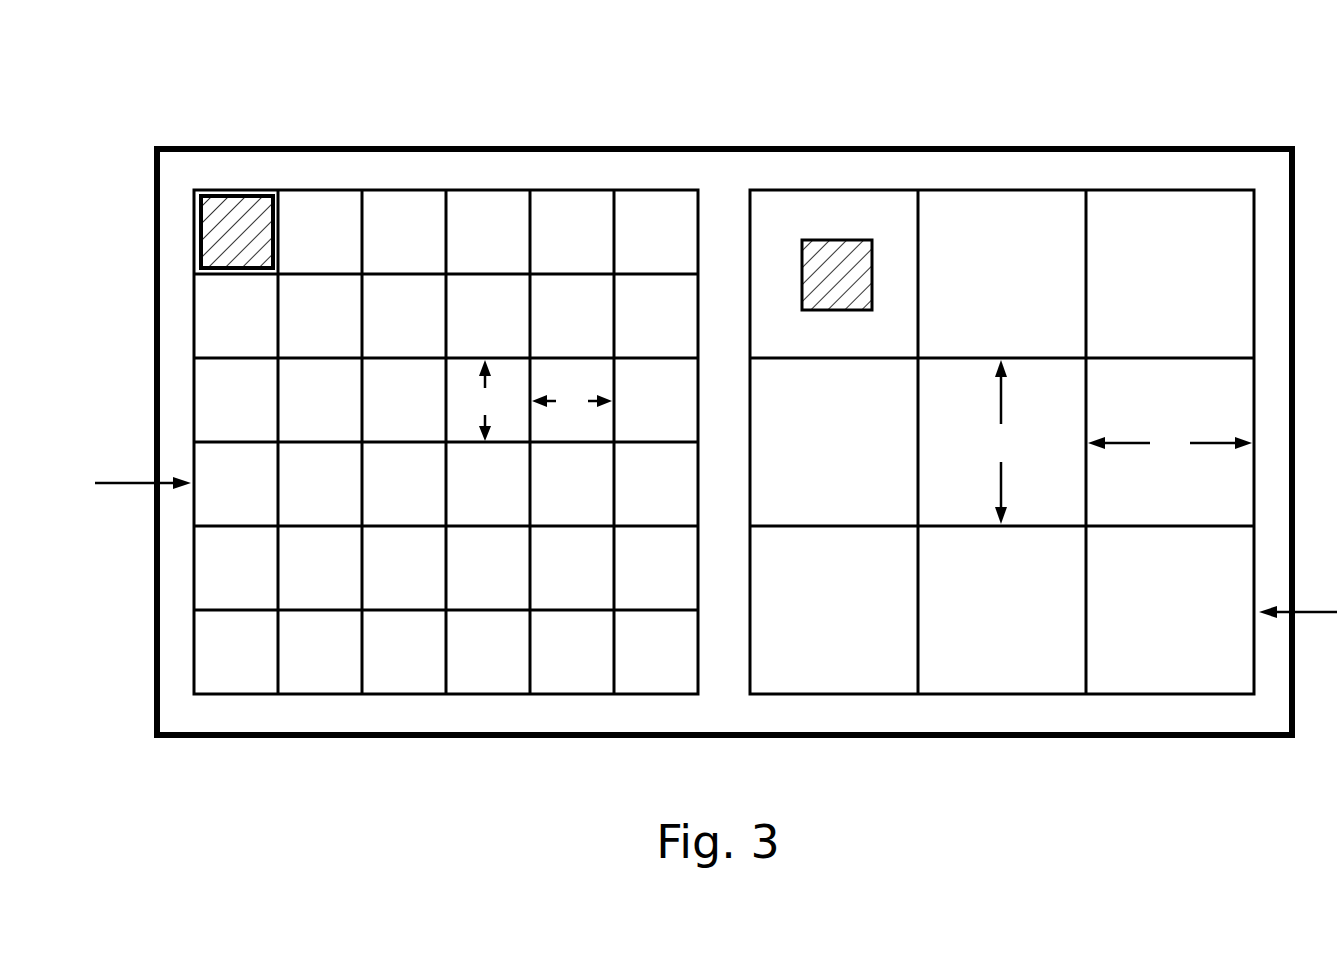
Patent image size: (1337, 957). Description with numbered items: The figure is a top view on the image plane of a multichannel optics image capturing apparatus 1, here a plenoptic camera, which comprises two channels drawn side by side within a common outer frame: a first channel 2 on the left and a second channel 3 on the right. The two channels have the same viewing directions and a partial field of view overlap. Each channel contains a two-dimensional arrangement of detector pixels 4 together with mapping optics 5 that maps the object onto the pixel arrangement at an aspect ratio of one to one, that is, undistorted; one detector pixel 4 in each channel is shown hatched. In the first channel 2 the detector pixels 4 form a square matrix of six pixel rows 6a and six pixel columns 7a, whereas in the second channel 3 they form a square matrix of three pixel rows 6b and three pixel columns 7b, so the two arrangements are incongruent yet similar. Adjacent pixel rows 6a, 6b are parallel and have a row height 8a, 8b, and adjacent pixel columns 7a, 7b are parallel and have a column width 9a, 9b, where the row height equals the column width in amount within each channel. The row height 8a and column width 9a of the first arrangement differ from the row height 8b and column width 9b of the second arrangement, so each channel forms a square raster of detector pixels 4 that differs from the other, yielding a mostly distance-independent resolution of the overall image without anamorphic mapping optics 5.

The multichannel optics image capturing apparatus 1 is at (790, 58).
The first channel 2 is at (407, 592).
The second channel 3 is at (993, 668).
The detector pixels 4 is at (233, 228).
The mapping optics 5 is at (446, 442).
The pixel rows 6a is at (143, 470).
The pixel rows 6b is at (1298, 598).
The pixel columns 7a is at (581, 172).
The pixel columns 7b is at (1021, 172).
The row height 8a is at (481, 400).
The row height 8b is at (1002, 442).
The column width 9a is at (572, 401).
The column width 9b is at (1170, 443).